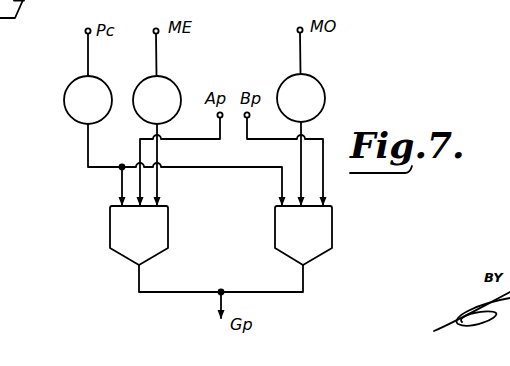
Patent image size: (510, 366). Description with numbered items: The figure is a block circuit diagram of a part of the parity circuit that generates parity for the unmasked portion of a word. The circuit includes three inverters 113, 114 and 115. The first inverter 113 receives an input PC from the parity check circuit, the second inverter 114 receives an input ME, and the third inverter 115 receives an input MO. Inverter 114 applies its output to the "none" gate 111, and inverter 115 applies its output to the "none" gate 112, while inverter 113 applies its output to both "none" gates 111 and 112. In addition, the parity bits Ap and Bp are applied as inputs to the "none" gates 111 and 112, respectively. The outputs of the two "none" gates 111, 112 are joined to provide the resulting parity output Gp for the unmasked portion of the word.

The "none" gate 111 is at (170, 224).
The "none" gate 112 is at (334, 223).
The inverter 113 is at (68, 85).
The inverter 114 is at (150, 81).
The inverter 115 is at (325, 86).